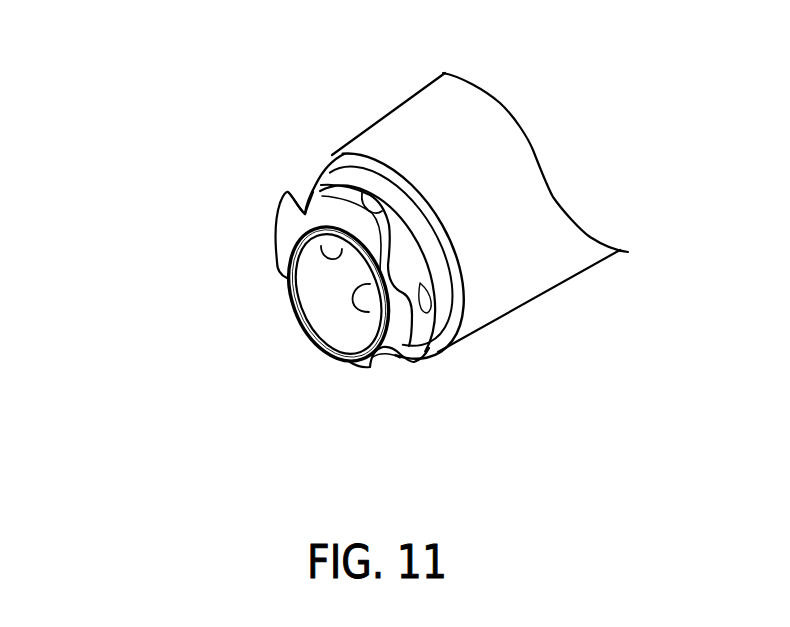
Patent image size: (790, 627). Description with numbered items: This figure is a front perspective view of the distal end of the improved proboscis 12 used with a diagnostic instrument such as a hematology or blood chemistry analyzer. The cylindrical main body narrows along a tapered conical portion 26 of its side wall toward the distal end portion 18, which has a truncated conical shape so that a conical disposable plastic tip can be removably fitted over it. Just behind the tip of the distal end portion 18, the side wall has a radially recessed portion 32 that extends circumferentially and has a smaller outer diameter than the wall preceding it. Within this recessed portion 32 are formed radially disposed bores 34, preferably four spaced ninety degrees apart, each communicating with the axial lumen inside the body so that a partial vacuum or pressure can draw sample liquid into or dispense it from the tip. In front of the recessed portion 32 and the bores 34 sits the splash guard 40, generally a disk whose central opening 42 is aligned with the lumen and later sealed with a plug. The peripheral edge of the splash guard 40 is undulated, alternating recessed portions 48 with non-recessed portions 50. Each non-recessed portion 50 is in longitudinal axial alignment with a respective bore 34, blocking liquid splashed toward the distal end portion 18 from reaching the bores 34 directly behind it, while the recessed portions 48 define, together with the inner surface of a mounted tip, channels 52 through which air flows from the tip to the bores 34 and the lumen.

The proboscis 12 is at (164, 110).
The distal end portion 18 is at (387, 112).
The conical portion 26 is at (493, 326).
The recessed portion 32 is at (437, 338).
The radially disposed bore 34 is at (377, 202).
The splash guard 40 is at (275, 234).
The central opening 42 is at (352, 328).
The recessed portion of the peripheral edge 48 is at (307, 200).
The non-recessed portion of the peripheral edge 50 is at (278, 262).
The channel 52 is at (388, 360).